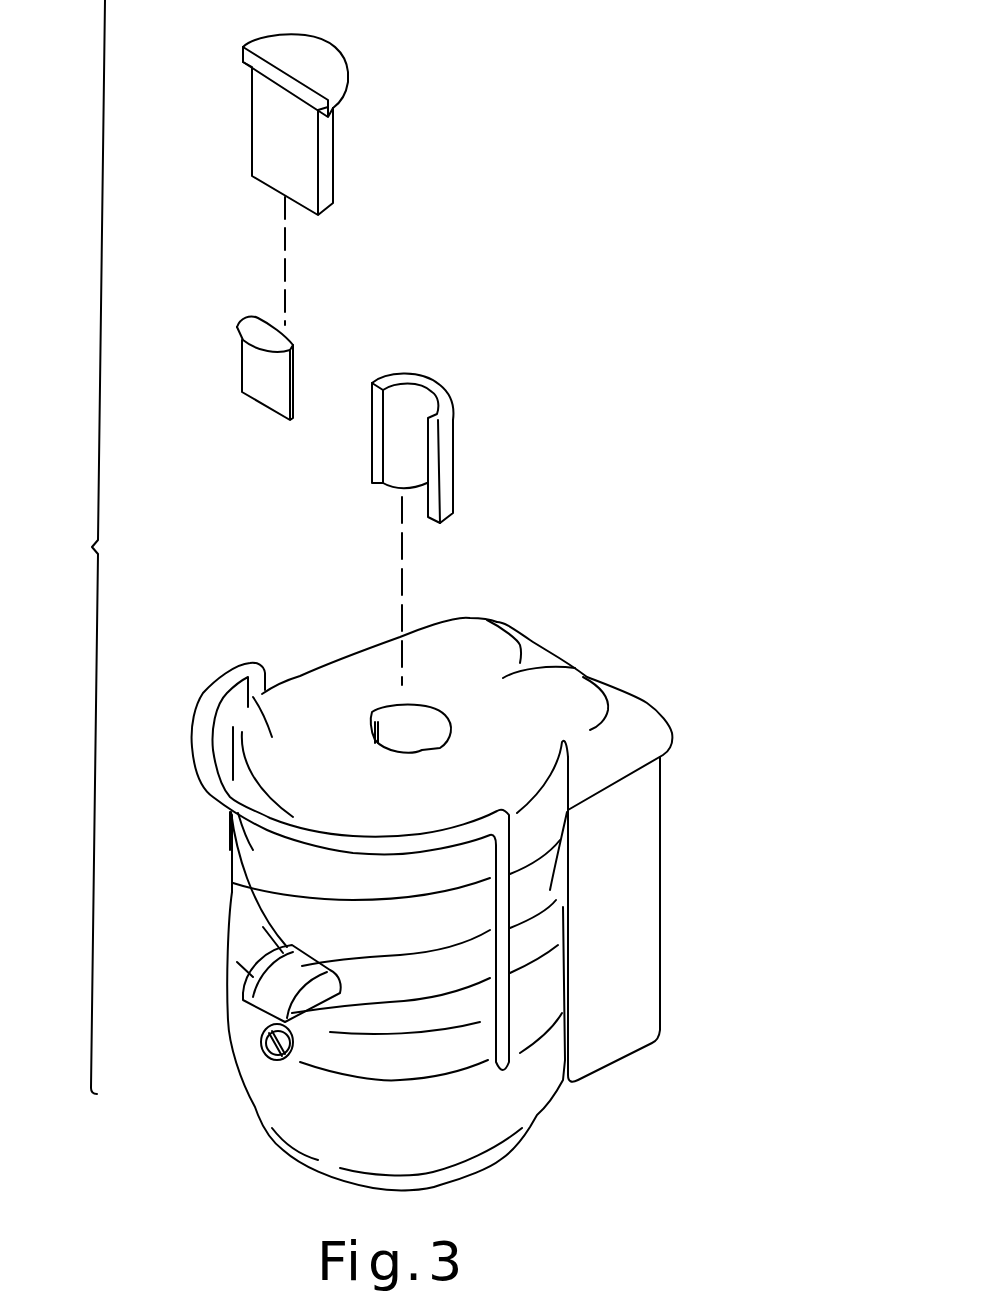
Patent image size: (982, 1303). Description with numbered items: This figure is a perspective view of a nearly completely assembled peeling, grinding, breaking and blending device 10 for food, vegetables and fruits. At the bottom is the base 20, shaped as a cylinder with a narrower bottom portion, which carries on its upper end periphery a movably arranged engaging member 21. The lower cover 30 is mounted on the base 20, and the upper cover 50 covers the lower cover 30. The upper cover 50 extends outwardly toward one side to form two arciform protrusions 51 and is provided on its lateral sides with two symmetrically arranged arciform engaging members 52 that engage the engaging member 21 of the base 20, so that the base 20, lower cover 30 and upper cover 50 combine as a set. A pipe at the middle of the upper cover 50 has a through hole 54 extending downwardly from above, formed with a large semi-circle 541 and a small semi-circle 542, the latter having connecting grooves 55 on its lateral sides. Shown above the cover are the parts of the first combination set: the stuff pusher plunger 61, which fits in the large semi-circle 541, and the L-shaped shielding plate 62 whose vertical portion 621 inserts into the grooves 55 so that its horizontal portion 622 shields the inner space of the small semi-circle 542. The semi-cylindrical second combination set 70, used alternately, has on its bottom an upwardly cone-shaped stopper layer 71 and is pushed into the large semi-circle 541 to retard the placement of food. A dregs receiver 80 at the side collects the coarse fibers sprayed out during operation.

The peeling, grinding, breaking and blending device 10 is at (76, 547).
The base 20 is at (273, 1093).
The engaging member 21 is at (193, 775).
The lower cover 30 is at (243, 878).
The upper cover 50 is at (425, 721).
The arciform protrusions 51 is at (613, 690).
The arciform engaging members 52 is at (460, 857).
The through hole 54 is at (434, 660).
The large semi-circle 541 is at (425, 723).
The small semi-circle 542 is at (375, 743).
The connecting grooves 55 is at (372, 722).
The stuff pusher plunger 61 is at (332, 62).
The shielding plate 62 is at (218, 359).
The vertical portion 621 is at (270, 395).
The horizontal portion 622 is at (238, 333).
The second combination set 70 is at (427, 449).
The stopper layer 71 is at (378, 485).
The dregs receiver 80 is at (640, 948).